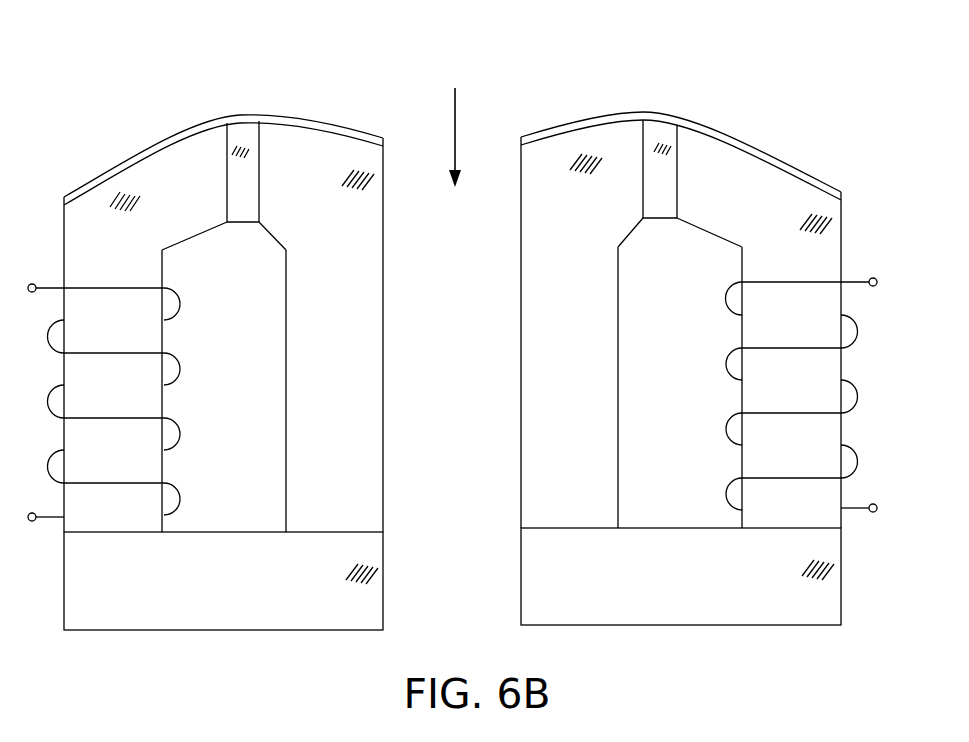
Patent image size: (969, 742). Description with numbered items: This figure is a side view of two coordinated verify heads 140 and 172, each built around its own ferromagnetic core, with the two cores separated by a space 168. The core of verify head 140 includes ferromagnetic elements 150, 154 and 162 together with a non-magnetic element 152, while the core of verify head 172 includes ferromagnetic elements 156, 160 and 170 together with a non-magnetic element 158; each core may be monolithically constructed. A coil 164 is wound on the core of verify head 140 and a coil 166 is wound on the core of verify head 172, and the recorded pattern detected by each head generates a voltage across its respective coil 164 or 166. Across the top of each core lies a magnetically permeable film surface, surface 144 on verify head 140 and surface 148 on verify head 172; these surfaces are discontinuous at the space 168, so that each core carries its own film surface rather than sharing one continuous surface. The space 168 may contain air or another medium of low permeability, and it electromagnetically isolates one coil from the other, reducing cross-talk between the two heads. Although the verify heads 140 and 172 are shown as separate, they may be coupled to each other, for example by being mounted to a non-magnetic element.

The verify head 140 is at (118, 134).
The magnetically permeable film surface 144 is at (243, 114).
The magnetically permeable film surface 148 is at (643, 112).
The ferromagnetic element 150 is at (96, 254).
The non-magnetic element 152 is at (247, 185).
The ferromagnetic element 154 is at (316, 254).
The ferromagnetic element 156 is at (553, 250).
The non-magnetic element 158 is at (655, 182).
The ferromagnetic element 160 is at (756, 250).
The ferromagnetic element 162 is at (131, 597).
The coil 164 is at (178, 368).
The coil 166 is at (727, 365).
The space 168 is at (455, 124).
The ferromagnetic element 170 is at (580, 590).
The verify head 172 is at (549, 96).